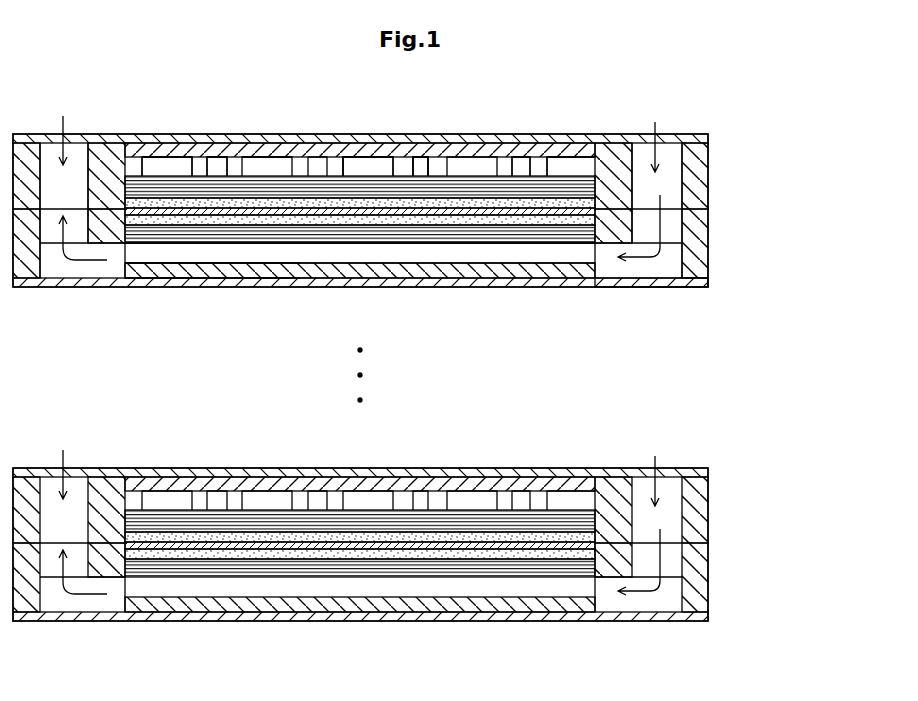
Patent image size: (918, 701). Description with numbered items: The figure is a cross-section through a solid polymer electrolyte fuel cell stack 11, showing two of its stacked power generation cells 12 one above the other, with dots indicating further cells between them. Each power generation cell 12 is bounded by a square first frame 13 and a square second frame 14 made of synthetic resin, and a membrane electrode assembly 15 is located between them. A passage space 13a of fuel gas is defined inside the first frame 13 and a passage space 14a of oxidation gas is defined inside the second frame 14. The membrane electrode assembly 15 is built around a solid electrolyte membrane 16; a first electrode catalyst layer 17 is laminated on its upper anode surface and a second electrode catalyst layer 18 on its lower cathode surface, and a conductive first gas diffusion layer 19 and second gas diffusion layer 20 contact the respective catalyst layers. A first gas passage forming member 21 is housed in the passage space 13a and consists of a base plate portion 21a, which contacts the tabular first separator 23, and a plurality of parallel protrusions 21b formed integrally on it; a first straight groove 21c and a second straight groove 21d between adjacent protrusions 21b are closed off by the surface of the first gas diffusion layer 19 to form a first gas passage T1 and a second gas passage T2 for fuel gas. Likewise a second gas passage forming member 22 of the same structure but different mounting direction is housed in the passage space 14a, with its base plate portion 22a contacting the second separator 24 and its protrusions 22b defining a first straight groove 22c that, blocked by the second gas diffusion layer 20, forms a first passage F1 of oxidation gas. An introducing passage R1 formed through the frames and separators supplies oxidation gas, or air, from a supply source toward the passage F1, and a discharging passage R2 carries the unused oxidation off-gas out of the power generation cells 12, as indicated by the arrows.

The fuel cell stack 11 is at (776, 193).
The power generation cell 12 is at (733, 132).
The first frame 13 is at (712, 190).
The passage space of fuel gas 13a is at (571, 158).
The second frame 14 is at (712, 249).
The passage space of oxidation gas 14a is at (550, 252).
The membrane electrode assembly 15 is at (272, 188).
The solid electrolyte membrane 16 is at (479, 203).
The first electrode catalyst layer 17 is at (473, 209).
The second electrode catalyst layer 18 is at (377, 226).
The first gas diffusion layer 19 is at (533, 220).
The second gas diffusion layer 20 is at (444, 237).
The first gas passage forming member 21 is at (329, 133).
The base plate portion 21a is at (516, 158).
The protrusions 21b is at (193, 166).
The first straight groove 21c is at (221, 162).
The second straight groove 21d is at (156, 162).
The second gas passage forming member 22 is at (290, 268).
The base plate portion 22a is at (497, 266).
The protrusions 22b is at (213, 258).
The first straight groove 22c is at (212, 312).
The first separator 23 is at (612, 143).
The second separator 24 is at (613, 283).
The introducing passage R1 is at (657, 302).
The discharging passage R2 is at (64, 295).
The first passage of oxidation gas F1 is at (151, 252).
The first gas passage of fuel gas T1 is at (422, 121).
The second gas passage of fuel gas T2 is at (368, 121).